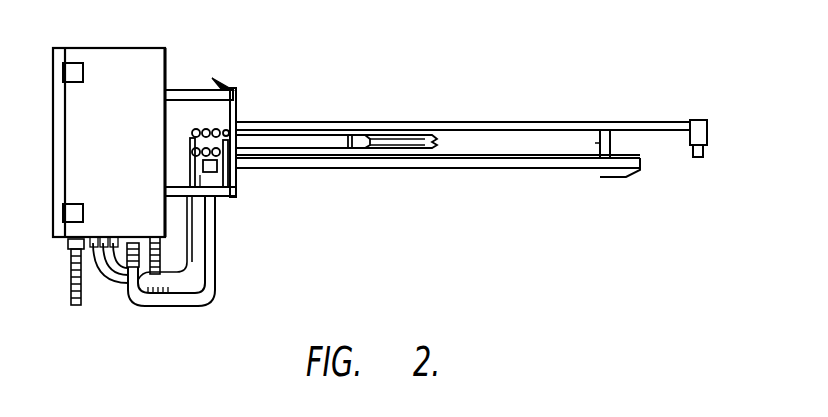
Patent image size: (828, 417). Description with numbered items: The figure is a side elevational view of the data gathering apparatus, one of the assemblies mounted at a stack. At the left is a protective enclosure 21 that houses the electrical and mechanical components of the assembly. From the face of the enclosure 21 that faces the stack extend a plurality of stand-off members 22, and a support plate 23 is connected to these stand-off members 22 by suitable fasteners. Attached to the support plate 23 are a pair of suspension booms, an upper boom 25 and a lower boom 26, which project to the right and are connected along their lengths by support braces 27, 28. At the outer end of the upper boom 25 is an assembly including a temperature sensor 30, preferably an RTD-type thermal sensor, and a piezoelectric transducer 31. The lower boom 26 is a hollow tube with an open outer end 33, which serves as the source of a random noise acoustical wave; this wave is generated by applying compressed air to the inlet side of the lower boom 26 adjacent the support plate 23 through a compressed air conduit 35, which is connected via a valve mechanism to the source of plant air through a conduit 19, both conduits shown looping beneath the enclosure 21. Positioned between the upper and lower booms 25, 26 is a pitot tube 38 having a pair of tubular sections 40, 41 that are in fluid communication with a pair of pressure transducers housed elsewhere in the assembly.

The conduit 19 is at (84, 304).
The protective enclosure 21 is at (112, 48).
The stand-off members 22 is at (198, 92).
The support plate 23 is at (236, 100).
The upper boom 25 is at (500, 121).
The lower boom 26 is at (470, 165).
The support brace 27 is at (355, 134).
The support brace 28 is at (605, 148).
The temperature sensor 30 is at (687, 137).
The piezoelectric transducer 31 is at (697, 157).
The open outer end 33 is at (630, 172).
The compressed air conduit 35 is at (207, 292).
The pitot tube 38 is at (428, 140).
The tubular section 40 is at (290, 136).
The tubular section 41 is at (293, 156).